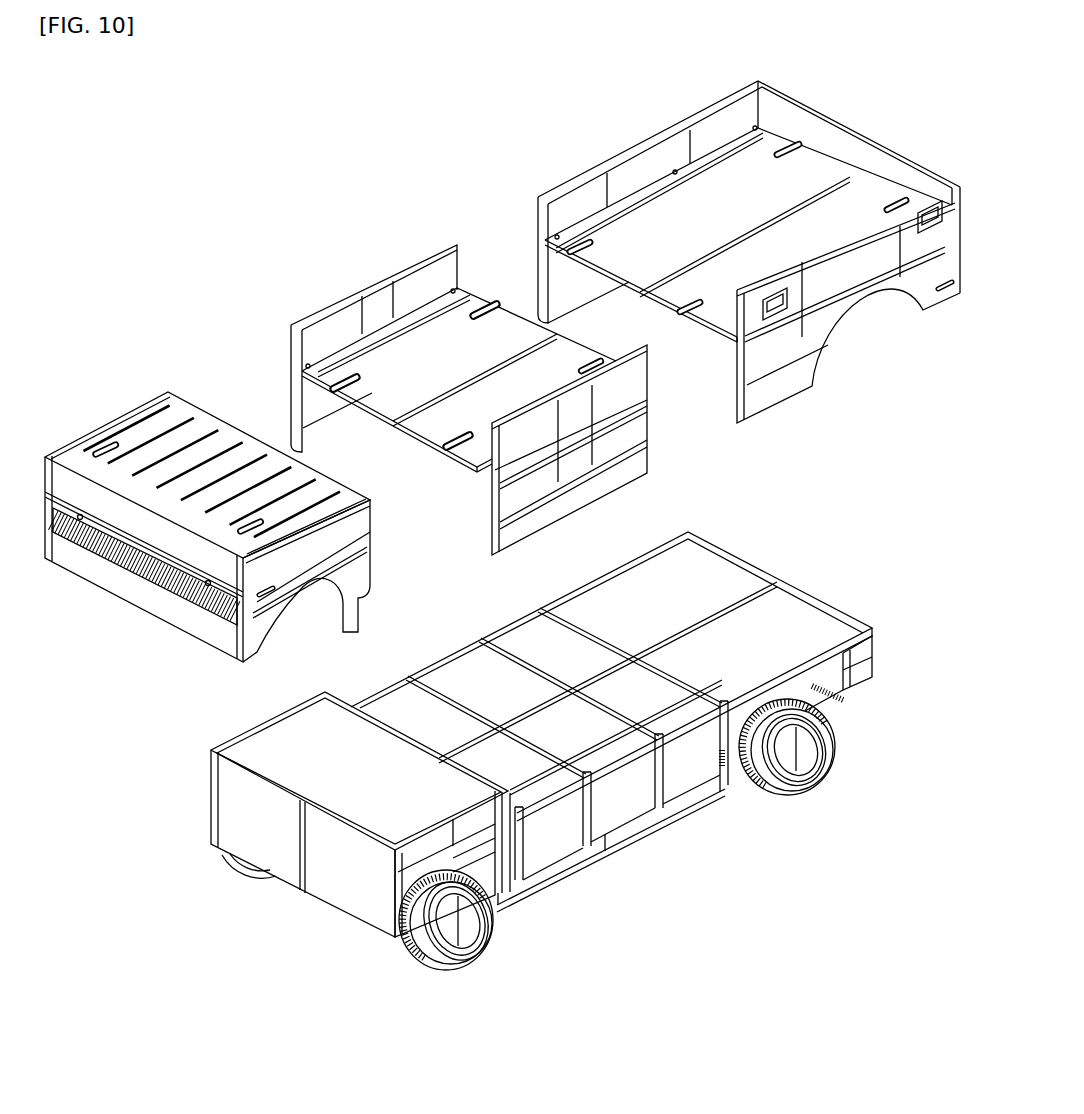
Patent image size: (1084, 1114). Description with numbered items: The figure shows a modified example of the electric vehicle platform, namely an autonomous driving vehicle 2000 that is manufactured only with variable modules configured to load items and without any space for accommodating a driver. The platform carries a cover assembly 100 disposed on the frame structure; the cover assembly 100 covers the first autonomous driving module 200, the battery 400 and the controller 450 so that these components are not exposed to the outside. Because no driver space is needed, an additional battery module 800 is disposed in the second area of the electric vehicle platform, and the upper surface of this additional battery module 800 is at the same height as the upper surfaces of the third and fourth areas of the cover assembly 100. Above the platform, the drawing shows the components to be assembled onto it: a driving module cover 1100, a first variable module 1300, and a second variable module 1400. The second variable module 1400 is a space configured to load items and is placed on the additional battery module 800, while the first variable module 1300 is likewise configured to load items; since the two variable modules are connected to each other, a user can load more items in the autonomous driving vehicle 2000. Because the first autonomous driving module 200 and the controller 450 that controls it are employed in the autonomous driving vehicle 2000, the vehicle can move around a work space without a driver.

The cover assembly 100 is at (500, 733).
The first autonomous driving module 200 is at (207, 756).
The battery 400 is at (617, 680).
The controller 450 is at (524, 640).
The additional battery module 800 is at (627, 808).
The driving module cover 1100 is at (124, 411).
The first variable module 1300 is at (636, 134).
The second variable module 1400 is at (351, 283).
The autonomous driving vehicle 2000 is at (432, 226).